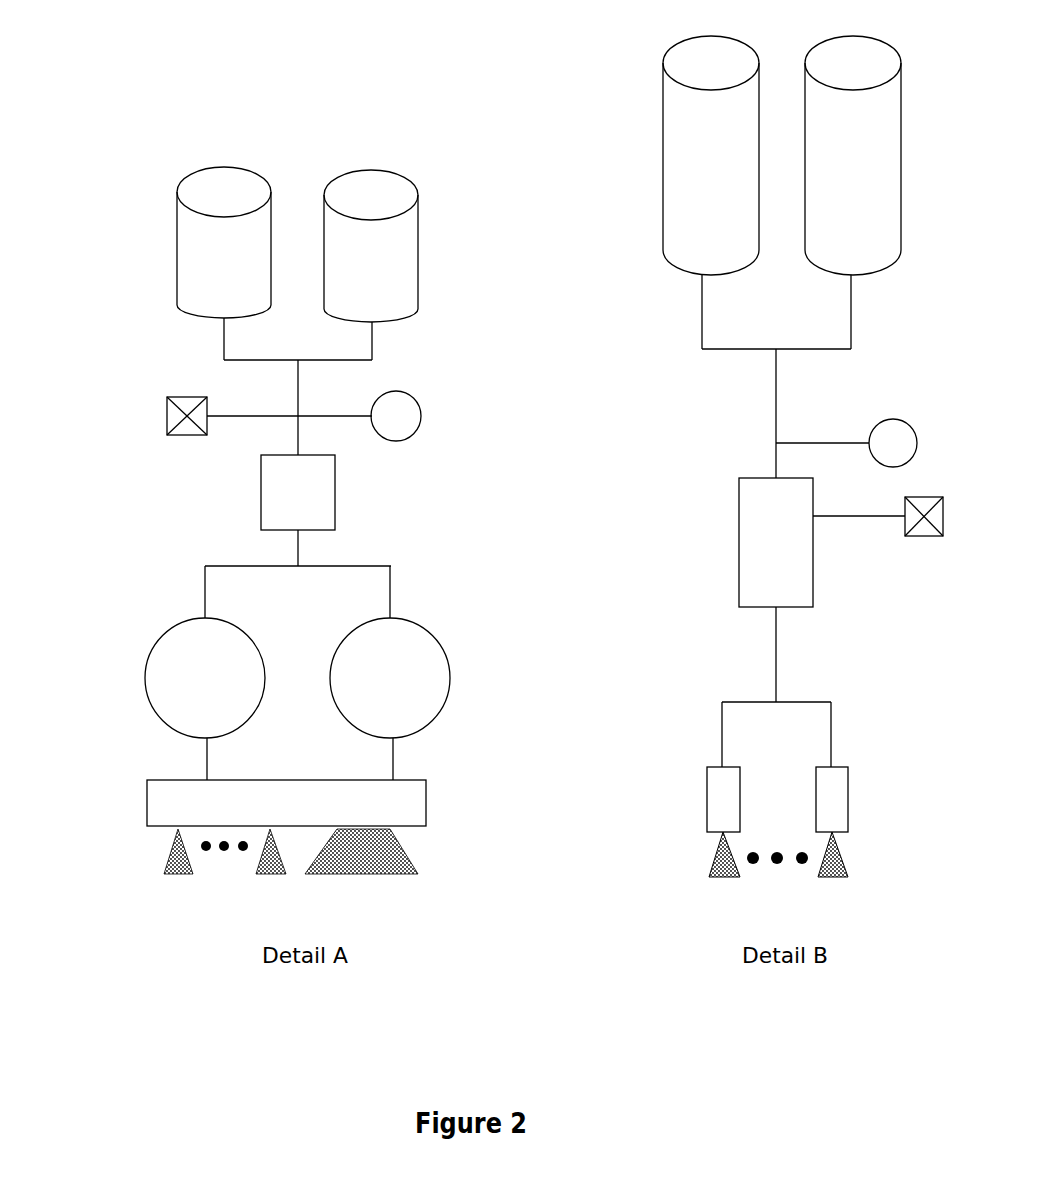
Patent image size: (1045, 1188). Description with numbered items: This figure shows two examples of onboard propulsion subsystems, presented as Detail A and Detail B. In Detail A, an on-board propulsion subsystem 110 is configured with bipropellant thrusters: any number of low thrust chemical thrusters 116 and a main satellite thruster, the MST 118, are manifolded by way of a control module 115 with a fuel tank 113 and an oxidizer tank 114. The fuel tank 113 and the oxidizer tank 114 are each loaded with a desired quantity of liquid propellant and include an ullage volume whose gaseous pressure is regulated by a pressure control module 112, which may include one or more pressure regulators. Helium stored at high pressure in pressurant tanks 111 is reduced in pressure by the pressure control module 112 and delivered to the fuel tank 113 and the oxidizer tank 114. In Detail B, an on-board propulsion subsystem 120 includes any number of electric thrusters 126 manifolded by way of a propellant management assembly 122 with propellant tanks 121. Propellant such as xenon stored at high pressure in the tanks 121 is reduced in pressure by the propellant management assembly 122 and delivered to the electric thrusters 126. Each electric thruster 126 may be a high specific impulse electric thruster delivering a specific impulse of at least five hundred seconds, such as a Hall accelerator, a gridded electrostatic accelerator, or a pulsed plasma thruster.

The on-board propulsion subsystem 110 is at (122, 140).
The pressurant tanks 111 is at (204, 277).
The pressure control module 112 is at (278, 504).
The fuel tank 113 is at (185, 705).
The oxidizer tank 114 is at (370, 705).
The control module 115 is at (266, 815).
The low thrust chemical thrusters 116 is at (168, 858).
The MST 118 is at (405, 856).
The on-board propulsion subsystem 120 is at (625, 37).
The propellant tanks 121 is at (691, 200).
The propellant management assembly (PMA) 122 is at (756, 557).
The electric thrusters 126 is at (707, 838).